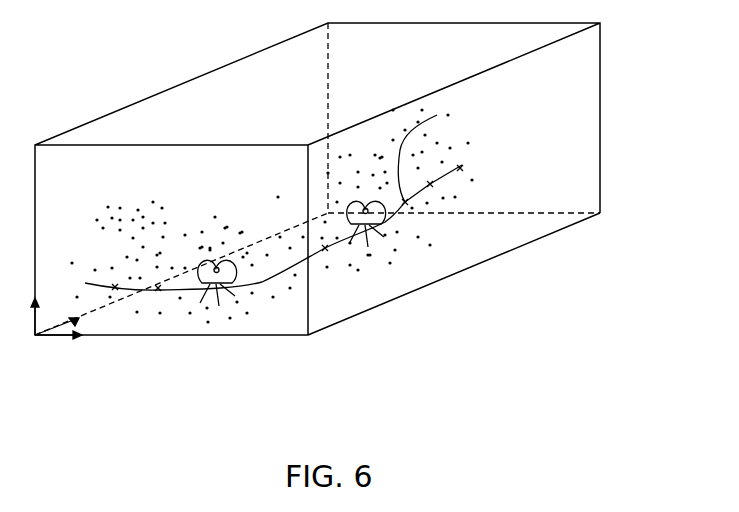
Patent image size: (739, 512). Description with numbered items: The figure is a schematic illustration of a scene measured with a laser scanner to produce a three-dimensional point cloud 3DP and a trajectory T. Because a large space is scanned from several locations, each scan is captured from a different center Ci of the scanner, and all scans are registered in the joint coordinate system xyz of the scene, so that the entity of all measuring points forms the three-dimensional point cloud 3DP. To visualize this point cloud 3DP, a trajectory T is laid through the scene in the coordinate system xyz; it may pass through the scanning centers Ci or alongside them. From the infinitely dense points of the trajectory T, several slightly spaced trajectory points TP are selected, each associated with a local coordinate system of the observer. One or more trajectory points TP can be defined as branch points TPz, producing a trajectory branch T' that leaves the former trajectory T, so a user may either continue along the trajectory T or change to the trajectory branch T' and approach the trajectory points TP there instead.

The three-dimensional point cloud 3DP is at (148, 213).
The trajectory T is at (273, 281).
The trajectory branch T' is at (521, 145).
The trajectory point TP is at (160, 293).
The branch point TPz is at (410, 203).
The center Ci is at (495, 283).
The joint coordinate system xyz is at (45, 332).